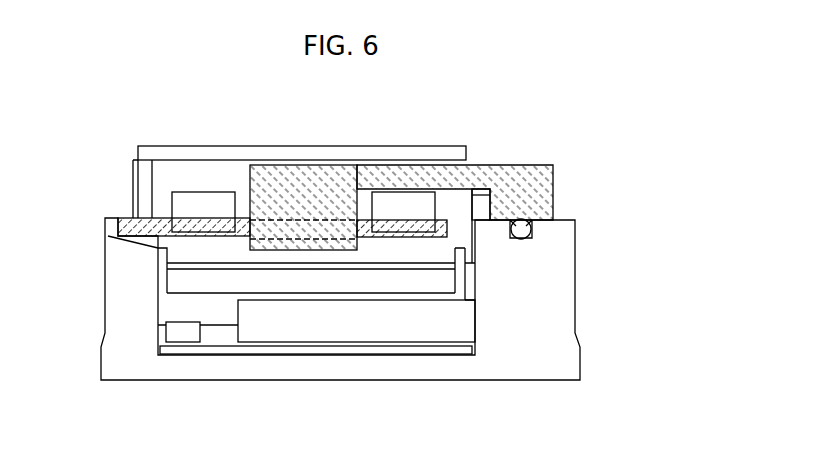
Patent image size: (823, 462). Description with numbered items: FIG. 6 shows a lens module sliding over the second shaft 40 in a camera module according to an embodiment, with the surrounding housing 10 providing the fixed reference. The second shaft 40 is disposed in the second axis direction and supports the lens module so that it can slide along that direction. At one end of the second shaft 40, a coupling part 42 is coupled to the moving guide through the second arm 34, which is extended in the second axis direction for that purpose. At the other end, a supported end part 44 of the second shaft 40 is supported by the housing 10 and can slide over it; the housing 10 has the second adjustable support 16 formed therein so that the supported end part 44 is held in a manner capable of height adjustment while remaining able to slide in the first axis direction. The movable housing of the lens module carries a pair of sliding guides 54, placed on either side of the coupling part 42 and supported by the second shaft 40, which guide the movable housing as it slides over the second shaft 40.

The housing 10 is at (555, 318).
The second adjustable support 16 is at (138, 243).
The second arm 34 is at (378, 173).
The second shaft 40 is at (447, 231).
The coupling part 42 is at (299, 238).
The supported end part 44 is at (118, 222).
The sliding guide 54 is at (203, 192).